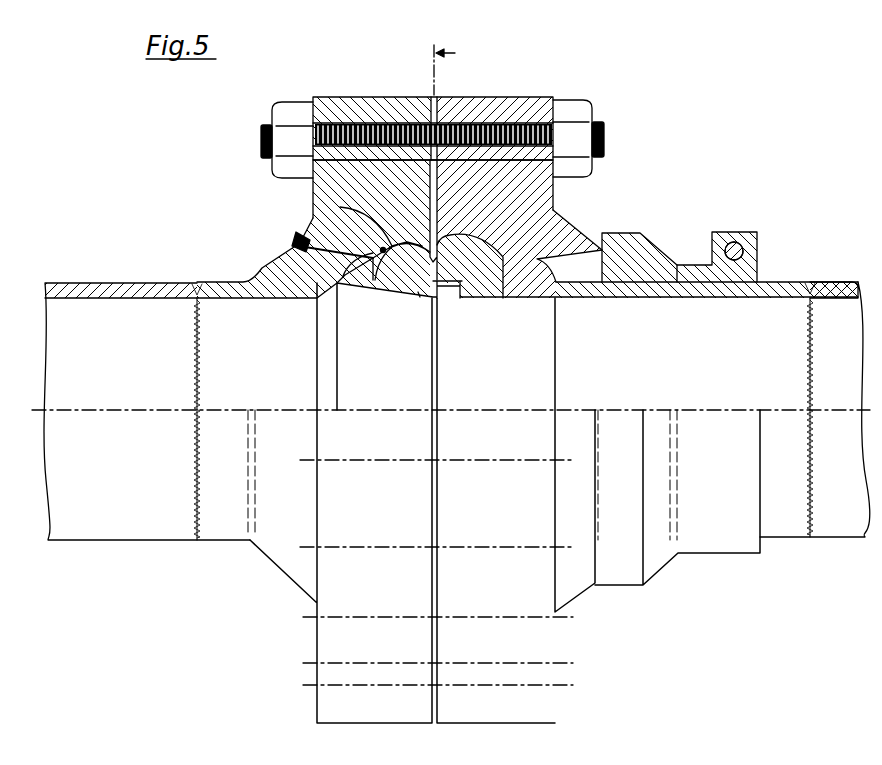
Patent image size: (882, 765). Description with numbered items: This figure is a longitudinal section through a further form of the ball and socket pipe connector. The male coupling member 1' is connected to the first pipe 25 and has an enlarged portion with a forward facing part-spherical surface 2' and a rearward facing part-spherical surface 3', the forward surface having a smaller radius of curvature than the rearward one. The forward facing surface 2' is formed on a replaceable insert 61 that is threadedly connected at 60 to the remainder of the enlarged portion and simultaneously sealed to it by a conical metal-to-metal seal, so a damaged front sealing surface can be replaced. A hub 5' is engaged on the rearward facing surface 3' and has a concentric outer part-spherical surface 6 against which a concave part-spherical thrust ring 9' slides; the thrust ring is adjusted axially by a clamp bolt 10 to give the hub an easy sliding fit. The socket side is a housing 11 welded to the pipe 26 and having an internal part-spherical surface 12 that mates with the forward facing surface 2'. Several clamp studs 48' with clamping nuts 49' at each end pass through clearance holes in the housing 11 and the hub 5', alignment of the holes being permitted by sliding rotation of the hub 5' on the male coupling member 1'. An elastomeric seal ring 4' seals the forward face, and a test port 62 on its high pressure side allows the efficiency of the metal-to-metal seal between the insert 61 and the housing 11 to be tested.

The male coupling member 1' is at (527, 441).
The forward facing part-spherical surface 2' is at (383, 282).
The rearward facing part-spherical surface 3' is at (480, 284).
The elastomeric seal ring 4' is at (324, 219).
The hub 5' is at (475, 229).
The outer part-spherical surface 6 is at (566, 220).
The thrust ring 9' is at (647, 246).
The clamp bolt 10 is at (734, 242).
The housing 11 is at (283, 262).
The internal part-spherical surface 12 is at (343, 292).
The first pipe 25 is at (830, 279).
The pipe 26 is at (143, 288).
The clamp studs 48' is at (433, 107).
The clamping nuts 49' is at (459, 121).
The threaded connection 60 is at (452, 298).
The insert 61 is at (418, 297).
The test port 62 is at (296, 238).